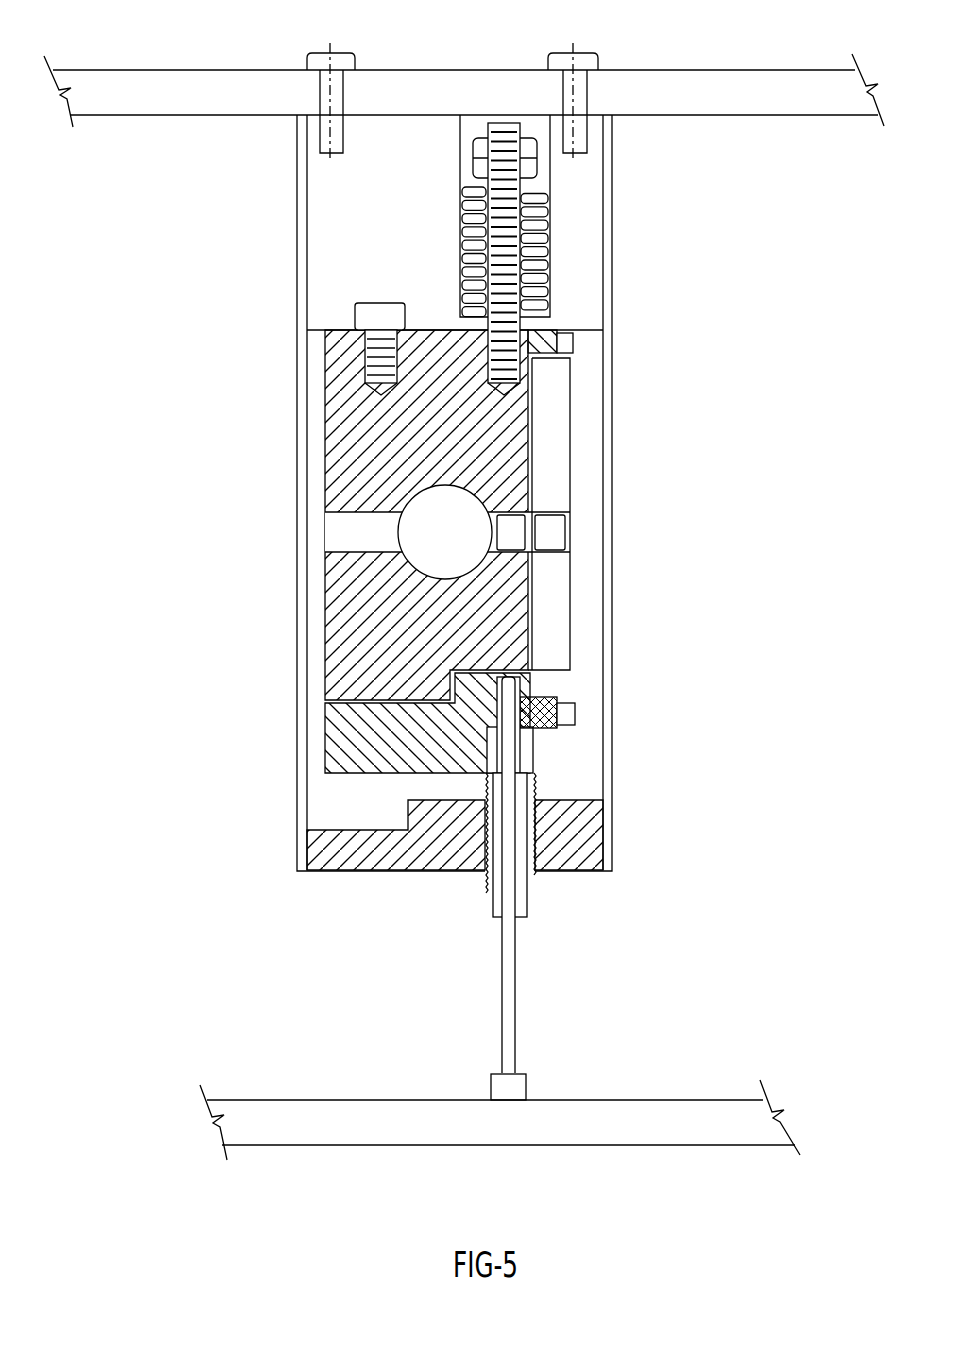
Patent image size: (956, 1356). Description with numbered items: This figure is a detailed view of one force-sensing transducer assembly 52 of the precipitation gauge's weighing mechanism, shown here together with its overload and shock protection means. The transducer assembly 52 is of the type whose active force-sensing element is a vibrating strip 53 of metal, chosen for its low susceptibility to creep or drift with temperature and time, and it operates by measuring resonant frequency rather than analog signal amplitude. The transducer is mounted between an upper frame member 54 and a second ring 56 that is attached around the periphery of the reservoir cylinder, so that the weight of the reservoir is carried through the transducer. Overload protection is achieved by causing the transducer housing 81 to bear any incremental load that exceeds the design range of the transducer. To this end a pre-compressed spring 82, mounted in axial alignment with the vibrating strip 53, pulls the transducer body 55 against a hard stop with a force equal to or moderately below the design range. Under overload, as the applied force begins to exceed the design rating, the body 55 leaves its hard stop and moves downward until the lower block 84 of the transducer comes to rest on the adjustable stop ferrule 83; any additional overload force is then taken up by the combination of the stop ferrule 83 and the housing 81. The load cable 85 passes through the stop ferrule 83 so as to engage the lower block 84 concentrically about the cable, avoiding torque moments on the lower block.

The force-sensing transducer assembly 52 is at (655, 458).
The vibrating strip 53 is at (532, 424).
The upper frame member 54 is at (680, 70).
The transducer body 55 is at (509, 598).
The second ring 56 is at (657, 1132).
The transducer housing 81 is at (608, 648).
The pre-compressed spring 82 is at (553, 227).
The adjustable stop ferrule 83 is at (533, 790).
The lower block 84 is at (333, 847).
The load cable 85 is at (513, 980).